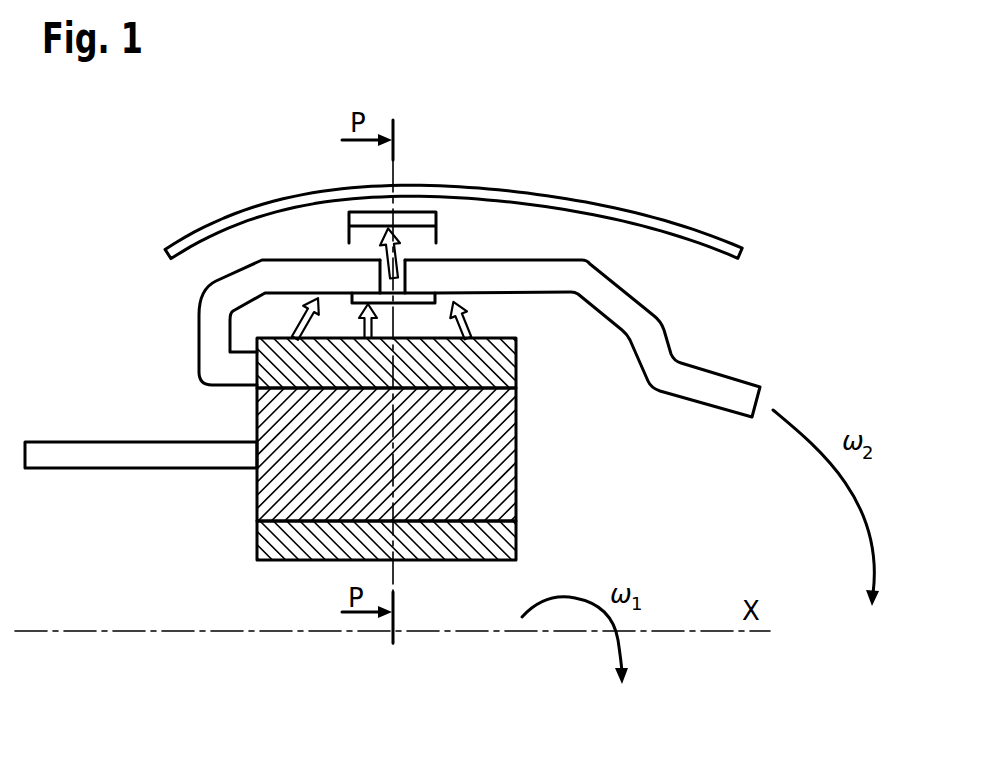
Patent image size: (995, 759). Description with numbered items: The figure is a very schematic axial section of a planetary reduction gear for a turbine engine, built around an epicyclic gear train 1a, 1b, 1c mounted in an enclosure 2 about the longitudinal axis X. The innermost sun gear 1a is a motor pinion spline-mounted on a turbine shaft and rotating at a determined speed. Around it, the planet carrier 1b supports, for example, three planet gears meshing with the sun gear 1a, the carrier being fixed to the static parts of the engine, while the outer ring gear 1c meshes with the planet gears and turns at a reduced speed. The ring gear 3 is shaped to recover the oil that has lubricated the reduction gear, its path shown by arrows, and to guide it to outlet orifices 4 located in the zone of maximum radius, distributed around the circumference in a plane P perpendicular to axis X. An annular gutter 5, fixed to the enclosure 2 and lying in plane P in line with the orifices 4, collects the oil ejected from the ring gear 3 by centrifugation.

The sun gear 1a is at (483, 545).
The planet carrier 1b is at (483, 440).
The outer ring gear 1c is at (483, 367).
The enclosure 2 is at (223, 222).
The ring gear 3 is at (637, 300).
The outlet orifices 4 is at (402, 265).
The annular gutter 5 is at (435, 210).